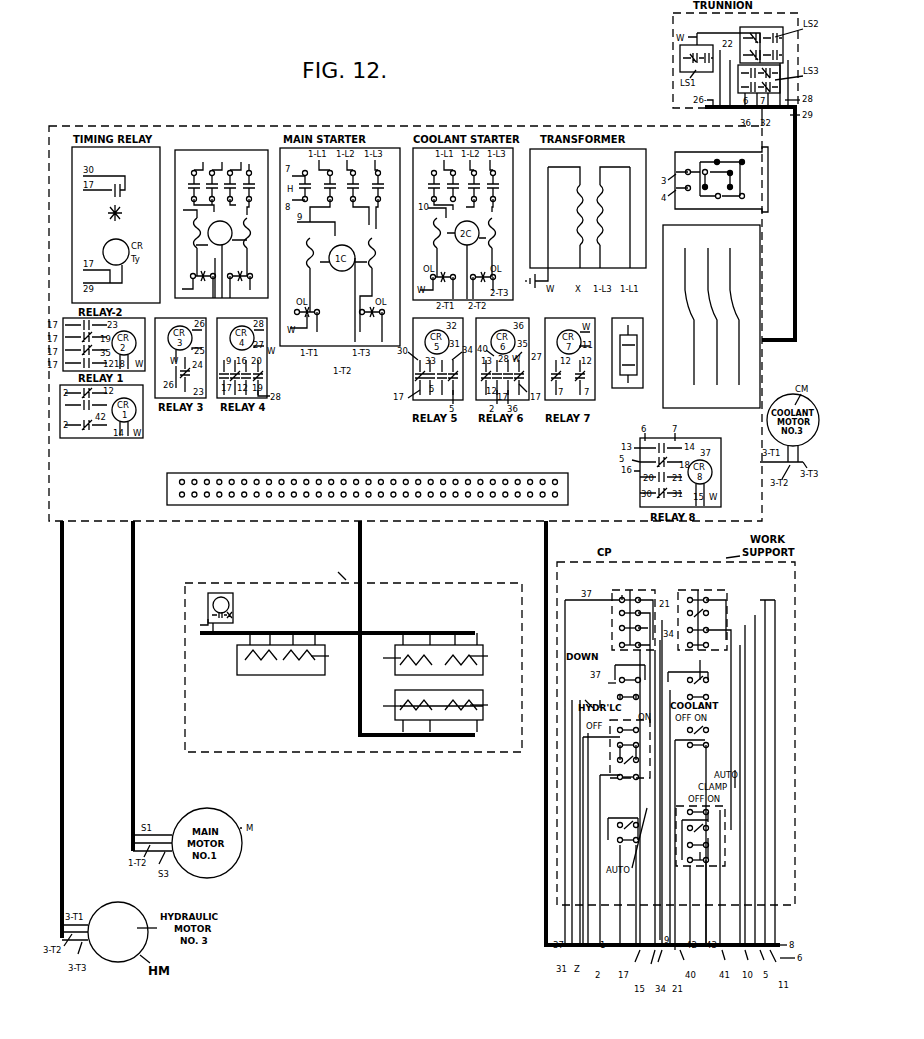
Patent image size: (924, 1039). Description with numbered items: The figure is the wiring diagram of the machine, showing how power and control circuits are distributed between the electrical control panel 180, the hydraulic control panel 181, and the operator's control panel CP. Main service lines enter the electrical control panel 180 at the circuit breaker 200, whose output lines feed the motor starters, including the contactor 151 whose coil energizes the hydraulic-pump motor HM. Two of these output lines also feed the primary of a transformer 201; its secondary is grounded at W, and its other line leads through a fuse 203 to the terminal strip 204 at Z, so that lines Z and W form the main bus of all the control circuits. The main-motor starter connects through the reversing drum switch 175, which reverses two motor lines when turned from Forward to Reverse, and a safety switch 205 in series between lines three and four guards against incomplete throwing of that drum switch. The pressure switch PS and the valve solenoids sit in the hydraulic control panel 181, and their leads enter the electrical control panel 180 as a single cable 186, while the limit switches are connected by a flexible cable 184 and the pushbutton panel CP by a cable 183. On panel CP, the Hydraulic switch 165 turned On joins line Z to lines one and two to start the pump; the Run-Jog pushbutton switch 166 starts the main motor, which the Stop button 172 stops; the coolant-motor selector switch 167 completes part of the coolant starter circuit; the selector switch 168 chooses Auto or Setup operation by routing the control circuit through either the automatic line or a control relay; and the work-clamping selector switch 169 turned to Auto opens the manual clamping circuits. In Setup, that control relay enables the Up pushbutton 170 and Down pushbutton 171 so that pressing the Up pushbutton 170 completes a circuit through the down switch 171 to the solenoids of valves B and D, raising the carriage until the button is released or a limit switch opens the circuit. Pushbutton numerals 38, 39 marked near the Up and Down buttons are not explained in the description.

The contactor 151 is at (178, 149).
The electrical control panel 180 is at (262, 127).
The flexible cable 184 is at (796, 238).
The reversing drum switch 175 is at (751, 177).
The safety switch 205 is at (686, 181).
The circuit breaker 200 is at (713, 310).
The transformer 201 is at (589, 217).
The fuse 203 is at (626, 360).
The terminal strip 204 is at (530, 474).
The cable 186 is at (362, 540).
The cable 183 is at (548, 541).
The hydraulic control panel 181 is at (325, 752).
The Up pushbutton 170 is at (623, 611).
The Down pushbutton 171 is at (608, 684).
The Stop button 172 is at (712, 672).
The Hydraulic switch 165 is at (618, 737).
The Run-Jog pushbutton switch 166 is at (720, 603).
The coolant-motor selector switch 167 is at (685, 795).
The selector switch 168 is at (621, 872).
The work-clamping selector switch 169 is at (700, 866).
The up pushbutton 38 is at (606, 580).
The down pushbutton 39 is at (630, 670).